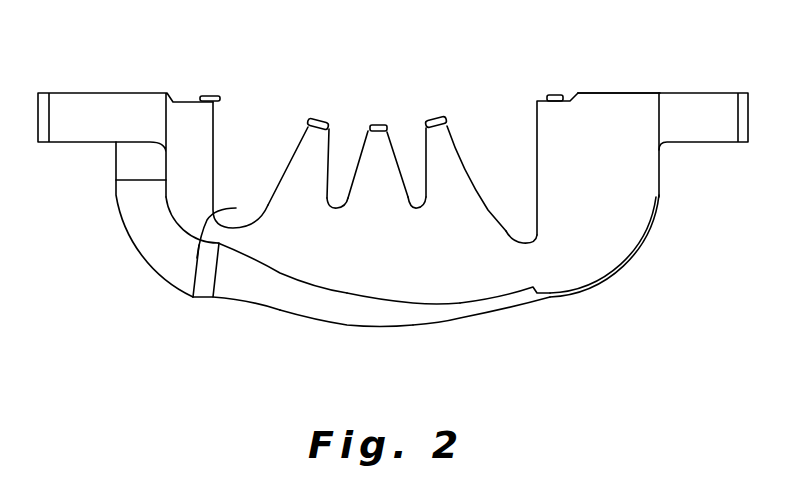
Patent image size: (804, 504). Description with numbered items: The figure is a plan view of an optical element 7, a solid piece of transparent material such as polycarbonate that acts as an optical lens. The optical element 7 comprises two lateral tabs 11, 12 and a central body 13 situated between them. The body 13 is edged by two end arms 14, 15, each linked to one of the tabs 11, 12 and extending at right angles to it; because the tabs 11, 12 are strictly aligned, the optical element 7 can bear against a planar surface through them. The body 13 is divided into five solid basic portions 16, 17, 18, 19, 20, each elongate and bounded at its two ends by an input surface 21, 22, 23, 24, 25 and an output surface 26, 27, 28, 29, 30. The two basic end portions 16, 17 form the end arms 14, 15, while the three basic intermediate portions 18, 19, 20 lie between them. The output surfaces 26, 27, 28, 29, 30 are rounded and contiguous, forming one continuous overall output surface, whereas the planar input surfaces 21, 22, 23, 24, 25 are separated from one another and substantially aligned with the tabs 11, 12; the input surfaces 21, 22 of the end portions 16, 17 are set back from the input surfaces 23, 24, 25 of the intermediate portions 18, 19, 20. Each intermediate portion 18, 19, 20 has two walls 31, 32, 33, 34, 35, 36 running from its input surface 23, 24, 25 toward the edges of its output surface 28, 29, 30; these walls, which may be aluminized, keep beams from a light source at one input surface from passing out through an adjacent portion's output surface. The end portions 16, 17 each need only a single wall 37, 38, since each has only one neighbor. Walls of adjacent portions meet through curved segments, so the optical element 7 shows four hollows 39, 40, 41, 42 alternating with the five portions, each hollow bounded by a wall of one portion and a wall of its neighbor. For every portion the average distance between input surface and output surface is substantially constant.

The optical element 7 is at (716, 61).
The lateral tab 11 is at (75, 118).
The lateral tab 12 is at (708, 118).
The central body 13 is at (307, 284).
The end arm 14 is at (150, 225).
The end arm 15 is at (592, 240).
The basic end portion 16 is at (147, 200).
The basic end portion 17 is at (617, 190).
The basic intermediate portion 18 is at (273, 230).
The basic intermediate portion 19 is at (382, 275).
The basic intermediate portion 20 is at (493, 263).
The input surface 21 is at (190, 100).
The input surface 22 is at (538, 101).
The input surface 23 is at (329, 121).
The input surface 24 is at (380, 125).
The input surface 25 is at (436, 118).
The output surface 26 is at (148, 270).
The output surface 27 is at (638, 257).
The output surface 28 is at (273, 300).
The output surface 29 is at (335, 310).
The output surface 30 is at (463, 310).
The wall 31 is at (287, 167).
The wall 32 is at (338, 143).
The wall 33 is at (348, 155).
The wall 34 is at (397, 147).
The wall 35 is at (413, 150).
The wall 36 is at (465, 158).
The wall 37 is at (217, 127).
The wall 38 is at (538, 162).
The hollow 39 is at (193, 297).
The hollow 40 is at (336, 200).
The hollow 41 is at (417, 200).
The hollow 42 is at (517, 204).